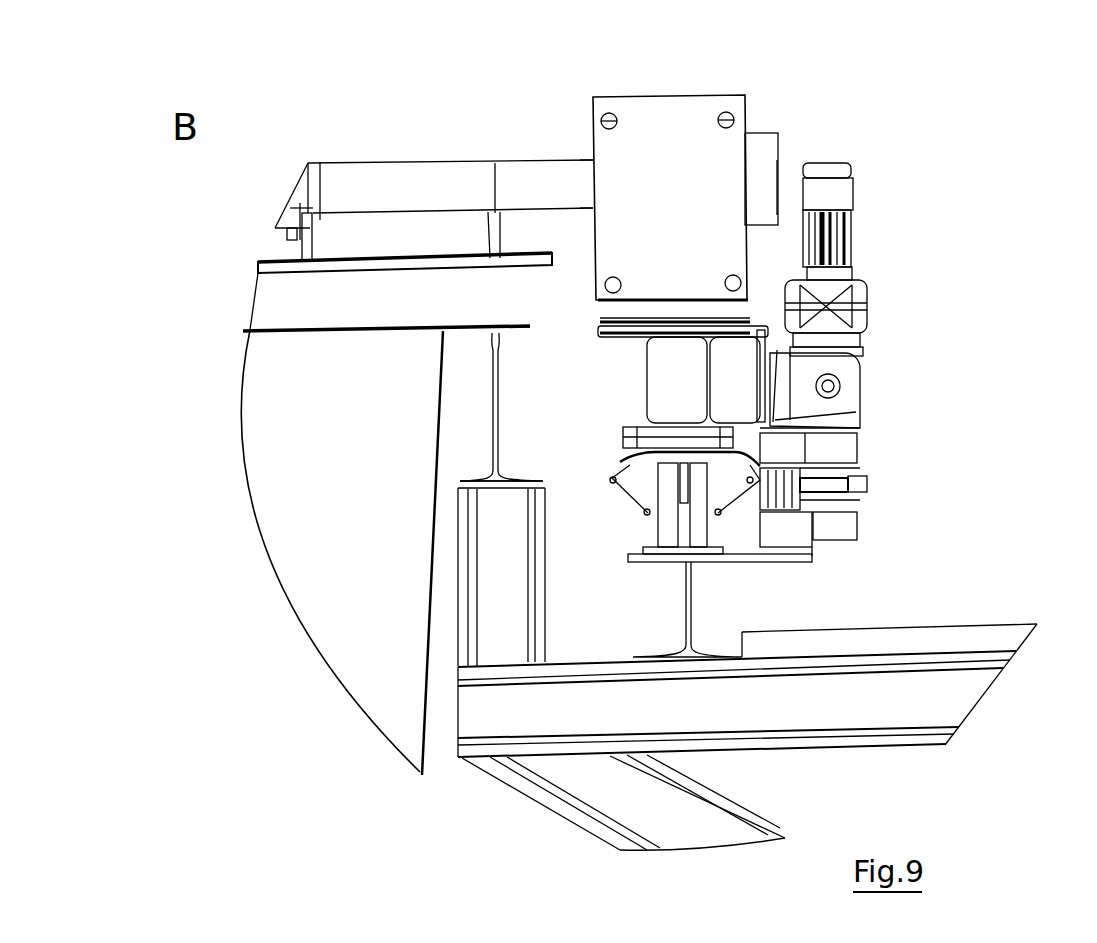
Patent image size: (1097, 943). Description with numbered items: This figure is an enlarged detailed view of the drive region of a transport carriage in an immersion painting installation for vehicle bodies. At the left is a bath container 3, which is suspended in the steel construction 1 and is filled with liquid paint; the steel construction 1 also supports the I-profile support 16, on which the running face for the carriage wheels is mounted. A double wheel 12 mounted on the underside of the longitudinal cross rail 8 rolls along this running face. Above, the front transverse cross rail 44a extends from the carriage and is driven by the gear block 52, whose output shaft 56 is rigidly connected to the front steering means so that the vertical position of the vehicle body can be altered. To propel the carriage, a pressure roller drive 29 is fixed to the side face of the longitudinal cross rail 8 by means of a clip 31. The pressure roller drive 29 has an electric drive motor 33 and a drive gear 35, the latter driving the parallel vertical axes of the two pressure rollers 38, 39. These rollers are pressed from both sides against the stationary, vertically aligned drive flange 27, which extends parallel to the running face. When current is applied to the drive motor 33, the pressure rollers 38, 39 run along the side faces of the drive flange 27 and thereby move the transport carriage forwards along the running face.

The steel construction 1 is at (902, 720).
The bath container 3 is at (378, 502).
The longitudinal cross rail 8 is at (650, 385).
The double wheel 12 is at (703, 530).
The I-profile support 16 is at (684, 600).
The drive flange 27 is at (813, 517).
The pressure roller drive 29 is at (880, 305).
The clip 31 is at (822, 430).
The electric drive motor 33 is at (830, 192).
The drive gear 35 is at (850, 415).
The pressure roller 38 is at (787, 527).
The pressure roller 39 is at (842, 530).
The front transverse cross rail 44a is at (323, 208).
The gear block 52 is at (665, 145).
The output shaft 56 is at (553, 187).